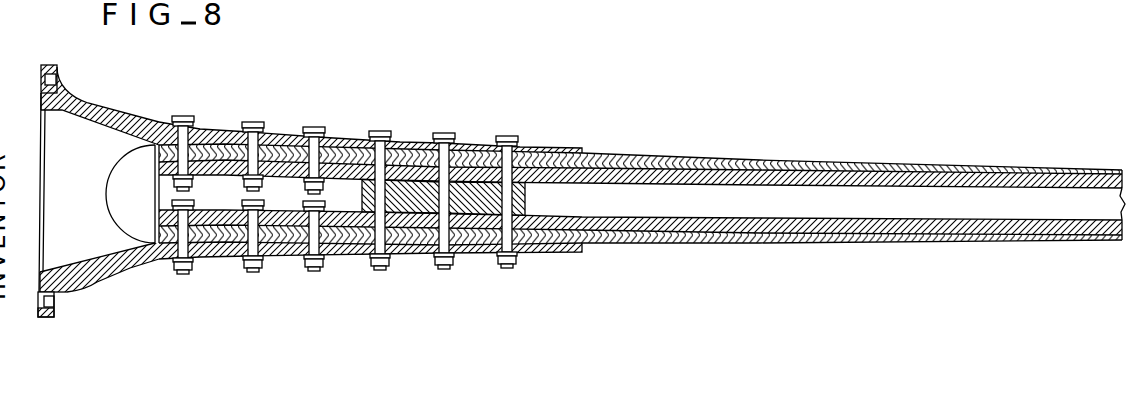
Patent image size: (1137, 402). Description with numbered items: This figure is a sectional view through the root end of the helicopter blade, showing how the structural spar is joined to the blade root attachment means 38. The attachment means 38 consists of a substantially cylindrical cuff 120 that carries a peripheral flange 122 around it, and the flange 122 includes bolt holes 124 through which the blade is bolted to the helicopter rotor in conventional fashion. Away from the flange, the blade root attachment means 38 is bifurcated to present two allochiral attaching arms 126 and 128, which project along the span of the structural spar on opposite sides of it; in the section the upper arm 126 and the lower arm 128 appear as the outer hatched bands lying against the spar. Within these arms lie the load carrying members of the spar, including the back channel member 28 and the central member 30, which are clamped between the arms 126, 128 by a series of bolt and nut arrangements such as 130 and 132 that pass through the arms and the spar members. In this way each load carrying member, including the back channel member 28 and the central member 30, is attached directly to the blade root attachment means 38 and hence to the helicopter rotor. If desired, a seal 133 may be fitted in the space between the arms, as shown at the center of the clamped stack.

The back channel member 28 is at (652, 158).
The central member 30 is at (718, 175).
The blade root attachment means 38 is at (41, 97).
The cuff 120 is at (116, 112).
The peripheral flange 122 is at (62, 280).
The bolt holes 124 is at (41, 77).
The attaching arm 126 is at (226, 126).
The attaching arm 128 is at (234, 250).
The bolt and nut arrangement 130 is at (266, 136).
The bolt and nut arrangement 132 is at (338, 137).
The seal 133 is at (467, 190).